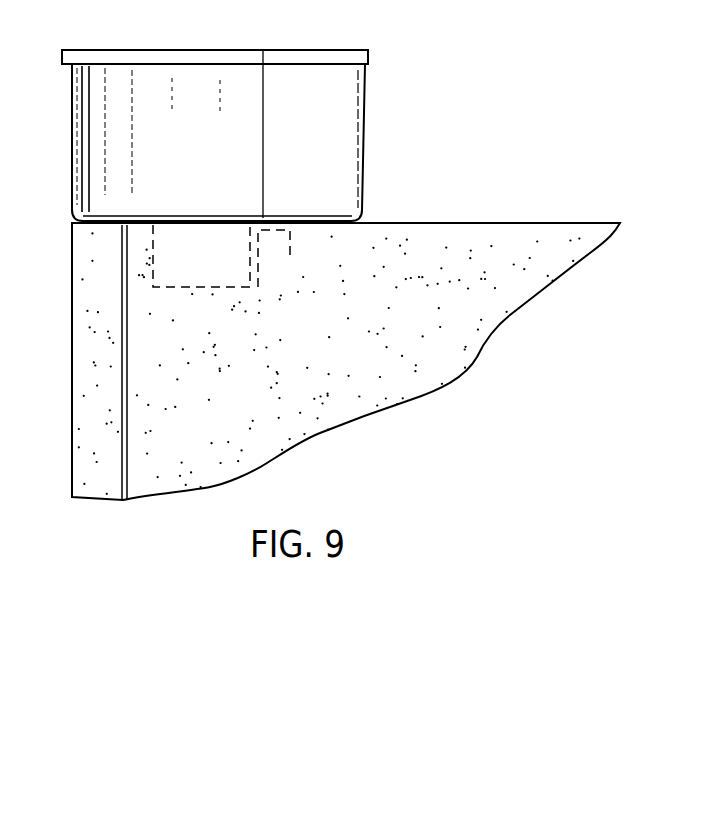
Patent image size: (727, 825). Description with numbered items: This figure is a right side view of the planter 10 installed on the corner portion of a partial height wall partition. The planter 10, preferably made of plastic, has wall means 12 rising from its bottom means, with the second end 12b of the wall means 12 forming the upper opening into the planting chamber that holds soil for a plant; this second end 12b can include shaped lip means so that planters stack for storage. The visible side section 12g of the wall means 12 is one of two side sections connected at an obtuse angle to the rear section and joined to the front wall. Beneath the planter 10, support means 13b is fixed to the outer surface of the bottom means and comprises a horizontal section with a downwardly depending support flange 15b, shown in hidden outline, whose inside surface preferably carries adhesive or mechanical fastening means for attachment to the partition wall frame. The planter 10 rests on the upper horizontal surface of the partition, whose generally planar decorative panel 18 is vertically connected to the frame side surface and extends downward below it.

The planter 10 is at (378, 76).
The wall means 12 is at (88, 141).
The second end of wall means 12b is at (322, 58).
The side section 12g is at (345, 154).
The support means 13b is at (270, 260).
The downwardly depending support flange 15b is at (231, 297).
The generally planar decorative panel 18 is at (373, 408).